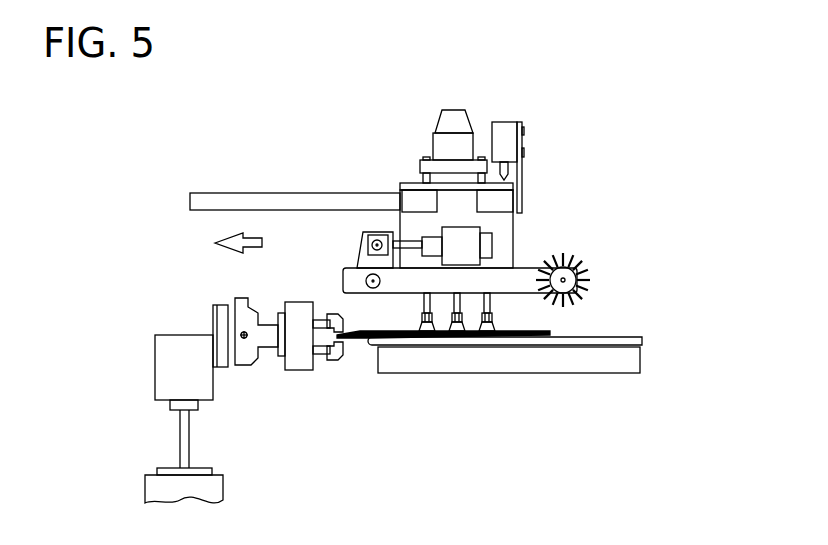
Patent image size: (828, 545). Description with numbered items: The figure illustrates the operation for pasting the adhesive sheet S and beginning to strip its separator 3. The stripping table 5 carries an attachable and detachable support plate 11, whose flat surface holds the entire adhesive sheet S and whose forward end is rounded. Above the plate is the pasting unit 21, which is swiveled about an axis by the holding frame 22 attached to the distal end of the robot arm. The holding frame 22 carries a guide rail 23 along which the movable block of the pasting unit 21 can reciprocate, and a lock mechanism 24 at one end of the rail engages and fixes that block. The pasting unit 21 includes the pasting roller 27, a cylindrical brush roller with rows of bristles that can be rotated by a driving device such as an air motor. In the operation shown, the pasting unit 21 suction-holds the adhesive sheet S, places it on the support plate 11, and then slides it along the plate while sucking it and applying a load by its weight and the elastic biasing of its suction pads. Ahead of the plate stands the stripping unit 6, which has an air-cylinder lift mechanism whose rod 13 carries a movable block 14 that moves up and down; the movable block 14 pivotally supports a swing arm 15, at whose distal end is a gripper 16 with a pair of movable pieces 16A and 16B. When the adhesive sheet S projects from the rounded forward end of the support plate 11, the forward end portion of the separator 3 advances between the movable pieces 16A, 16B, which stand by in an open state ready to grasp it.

The separator 3 is at (350, 334).
The stripping table 5 is at (525, 375).
The stripping unit 6 is at (145, 292).
The support plate 11 is at (623, 337).
The rod 13 is at (180, 447).
The movable block 14 is at (228, 305).
The swing arm 15 is at (268, 322).
The gripper 16 is at (303, 370).
The movable piece 16A is at (325, 312).
The movable piece 16B is at (333, 355).
The pasting unit 21 is at (560, 207).
The holding frame 22 is at (420, 165).
The guide rail 23 is at (266, 193).
The lock mechanism 24 is at (510, 122).
The pasting roller 27 is at (612, 285).